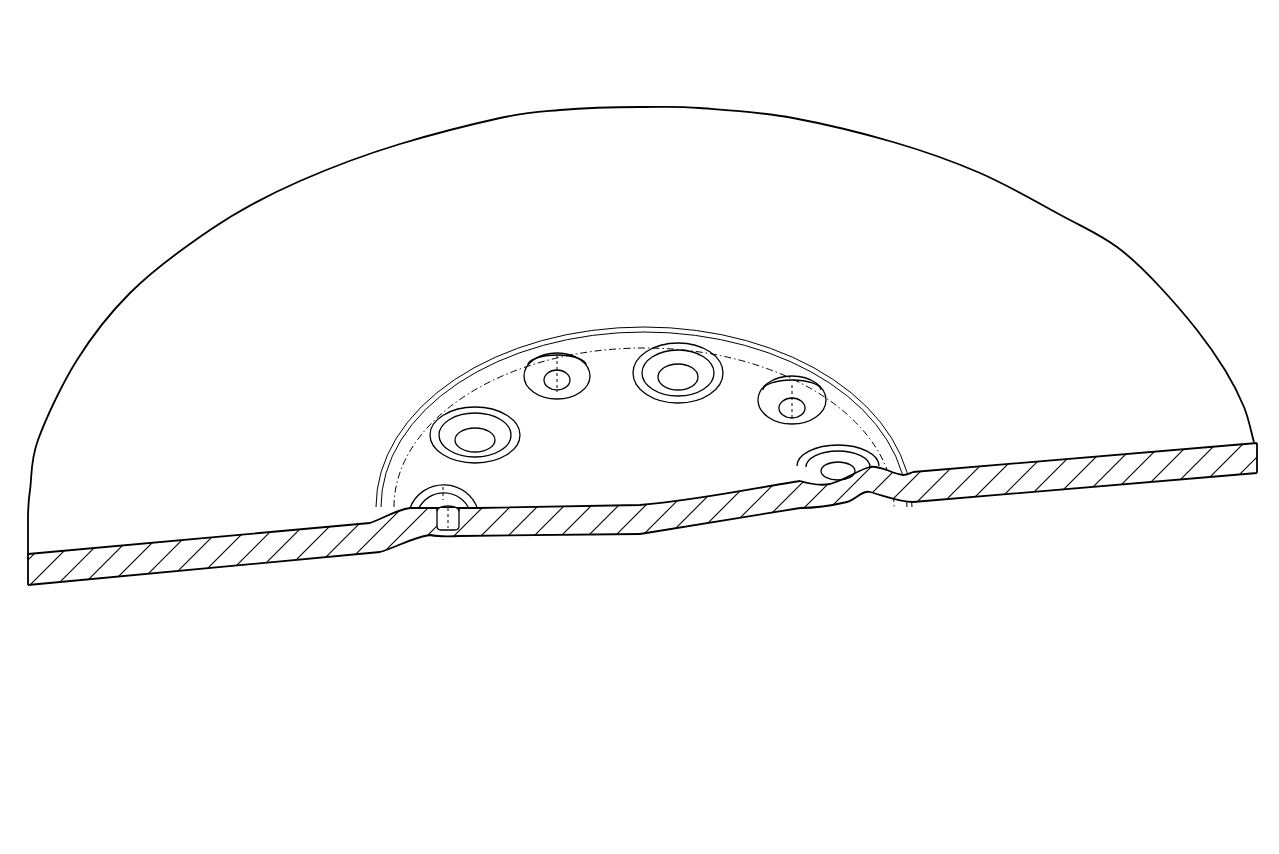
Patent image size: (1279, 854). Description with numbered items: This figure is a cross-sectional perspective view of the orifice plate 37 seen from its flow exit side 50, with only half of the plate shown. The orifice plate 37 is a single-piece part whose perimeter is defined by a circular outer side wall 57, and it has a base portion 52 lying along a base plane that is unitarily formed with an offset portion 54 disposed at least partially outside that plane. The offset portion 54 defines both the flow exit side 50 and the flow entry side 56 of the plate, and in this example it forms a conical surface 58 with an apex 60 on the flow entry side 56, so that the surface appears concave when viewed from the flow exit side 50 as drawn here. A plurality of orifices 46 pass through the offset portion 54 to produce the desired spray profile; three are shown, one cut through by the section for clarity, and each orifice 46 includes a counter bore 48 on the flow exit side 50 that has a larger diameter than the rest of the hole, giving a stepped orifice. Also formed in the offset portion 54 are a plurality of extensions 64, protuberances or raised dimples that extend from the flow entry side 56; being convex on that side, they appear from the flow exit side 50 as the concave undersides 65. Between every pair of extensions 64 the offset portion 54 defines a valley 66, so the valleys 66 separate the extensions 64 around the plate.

The orifice plate 37 is at (877, 130).
The orifices 46 is at (558, 385).
The counter bore 48 is at (543, 365).
The flow exit side 50 is at (733, 388).
The base portion 52 is at (917, 190).
The offset portion 54 is at (595, 492).
The flow entry side 56 is at (745, 522).
The circular outer side wall 57 is at (697, 107).
The conical surface 58 is at (613, 537).
The apex 60 is at (645, 535).
The extensions 64 is at (840, 510).
The concave undersides of the extensions 65 is at (468, 440).
The valleys 66 is at (467, 540).